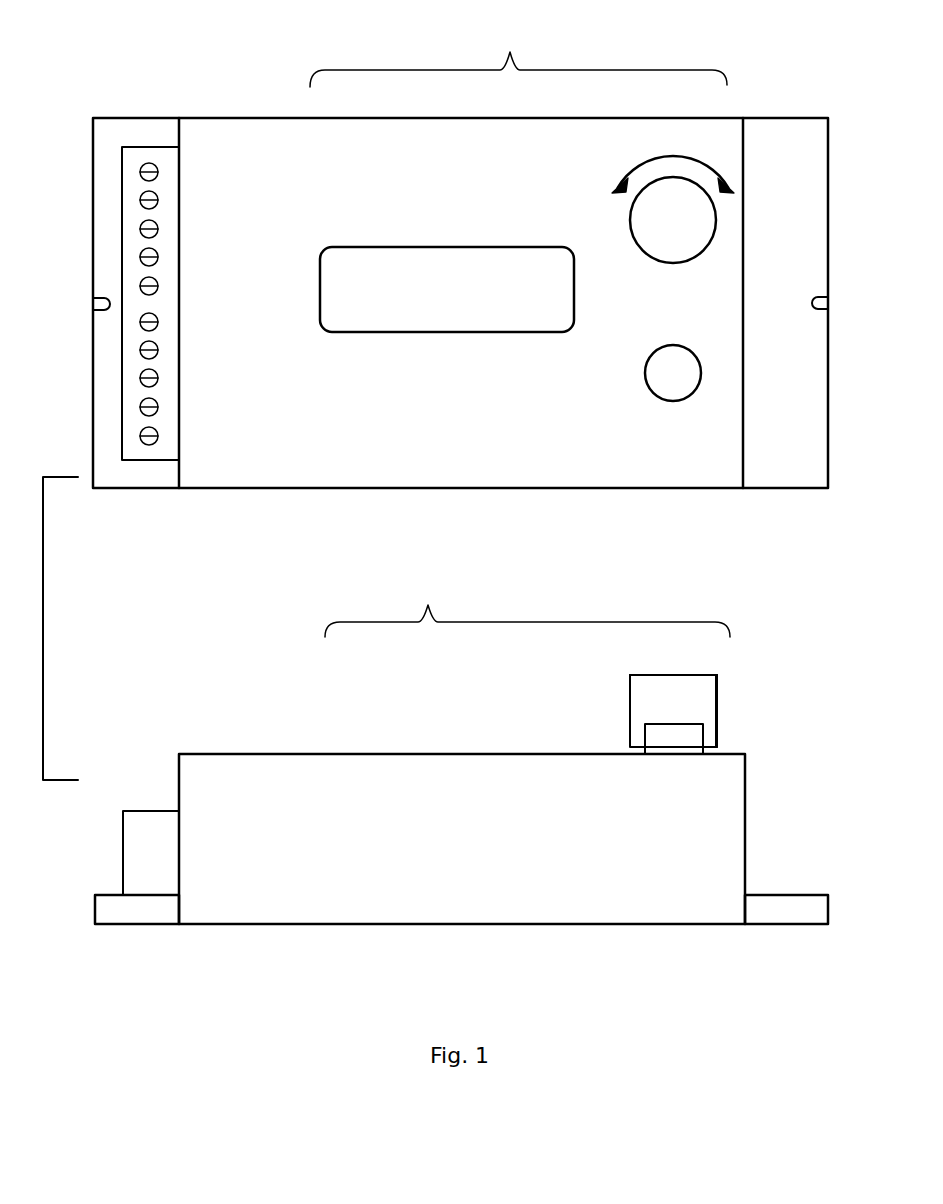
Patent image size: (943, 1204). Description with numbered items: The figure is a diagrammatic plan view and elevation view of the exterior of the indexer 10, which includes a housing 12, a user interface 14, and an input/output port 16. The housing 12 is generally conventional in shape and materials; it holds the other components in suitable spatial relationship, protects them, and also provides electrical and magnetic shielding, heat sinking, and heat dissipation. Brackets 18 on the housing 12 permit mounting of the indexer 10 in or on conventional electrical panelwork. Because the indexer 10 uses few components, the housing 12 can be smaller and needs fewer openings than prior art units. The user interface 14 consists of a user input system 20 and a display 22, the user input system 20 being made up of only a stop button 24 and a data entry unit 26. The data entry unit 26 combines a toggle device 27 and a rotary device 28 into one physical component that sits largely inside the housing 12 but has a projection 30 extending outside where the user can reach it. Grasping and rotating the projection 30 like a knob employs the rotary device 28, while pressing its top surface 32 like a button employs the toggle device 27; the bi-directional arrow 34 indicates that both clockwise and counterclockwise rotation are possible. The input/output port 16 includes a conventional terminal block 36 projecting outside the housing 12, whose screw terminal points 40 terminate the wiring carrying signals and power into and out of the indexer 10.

The indexer 10 is at (465, 489).
The housing 12 is at (460, 561).
The user interface 14 is at (520, 329).
The input/output port 16 is at (159, 155).
The brackets 18 is at (798, 315).
The user input system 20 is at (698, 415).
The display 22 is at (460, 291).
The stop button 24 is at (687, 384).
The data entry unit 26 is at (687, 231).
The toggle device 27 is at (671, 243).
The rotary device 28 is at (668, 246).
The projection 30 is at (720, 728).
The top surface 32 is at (675, 675).
The bi-directional arrow 34 is at (672, 157).
The terminal block 36 is at (152, 451).
The screw terminal points 40 is at (141, 432).